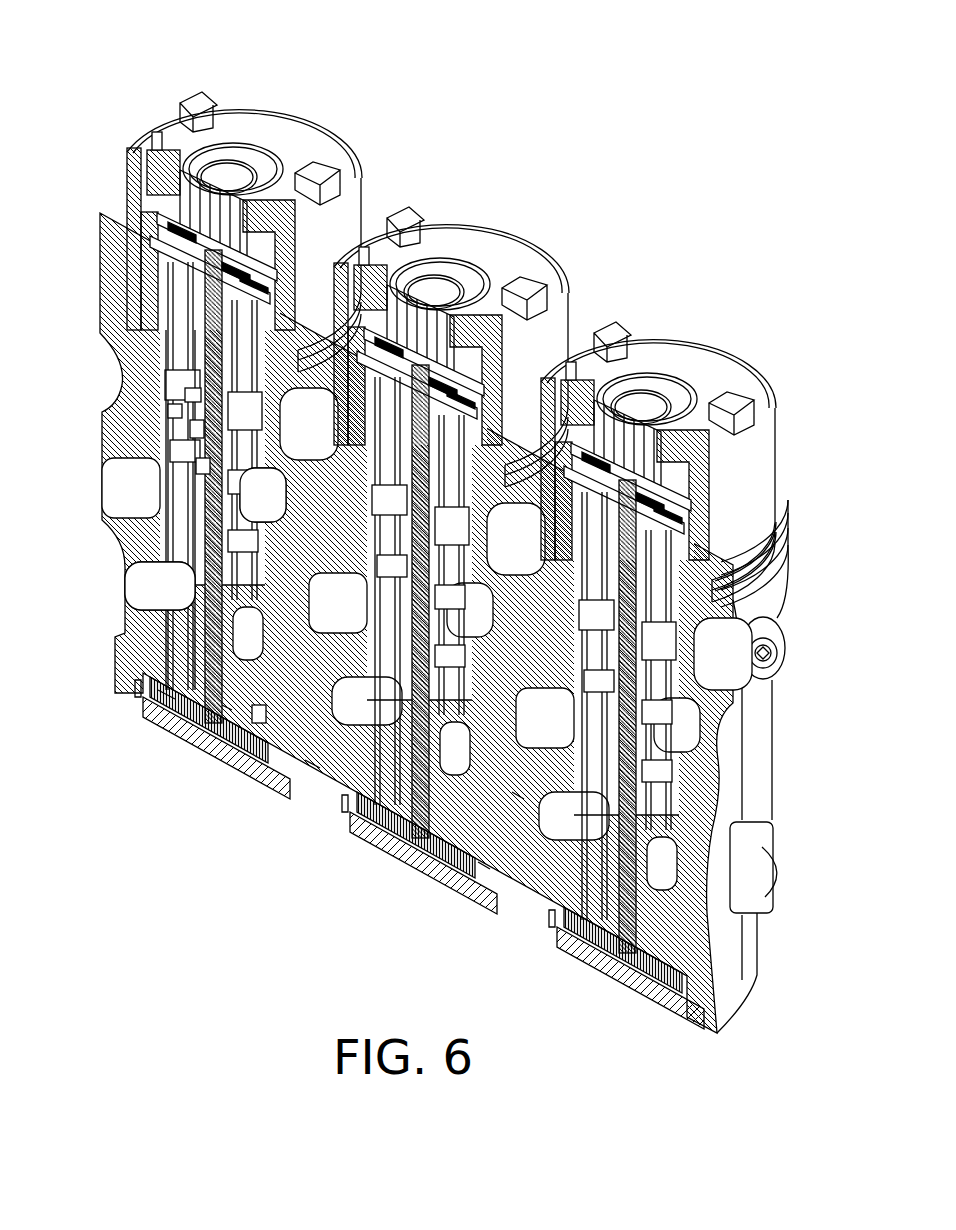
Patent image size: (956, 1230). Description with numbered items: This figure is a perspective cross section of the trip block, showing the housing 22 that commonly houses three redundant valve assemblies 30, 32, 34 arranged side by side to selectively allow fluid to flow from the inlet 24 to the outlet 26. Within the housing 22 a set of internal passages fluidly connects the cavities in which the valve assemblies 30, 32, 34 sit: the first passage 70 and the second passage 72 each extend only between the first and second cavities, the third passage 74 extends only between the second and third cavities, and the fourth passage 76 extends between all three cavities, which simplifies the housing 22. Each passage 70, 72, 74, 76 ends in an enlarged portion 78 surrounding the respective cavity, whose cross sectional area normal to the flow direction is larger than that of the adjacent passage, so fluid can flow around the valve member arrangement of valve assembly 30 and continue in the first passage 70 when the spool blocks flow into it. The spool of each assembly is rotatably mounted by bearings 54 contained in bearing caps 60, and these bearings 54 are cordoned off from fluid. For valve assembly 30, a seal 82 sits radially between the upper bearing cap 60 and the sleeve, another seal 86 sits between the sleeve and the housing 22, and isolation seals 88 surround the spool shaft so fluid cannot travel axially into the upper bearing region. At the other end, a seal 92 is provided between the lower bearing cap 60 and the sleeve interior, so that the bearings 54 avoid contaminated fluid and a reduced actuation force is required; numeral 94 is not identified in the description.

The housing 22 is at (377, 845).
The inlet 24 is at (102, 437).
The outlet 26 is at (762, 836).
The valve assembly 30 is at (221, 82).
The valve assembly 32 is at (457, 212).
The valve assembly 34 is at (675, 327).
The bearings 54 is at (177, 327).
The bearing cap 60 is at (200, 430).
The first passage 70 is at (315, 760).
The second passage 72 is at (280, 513).
The third passage 74 is at (483, 867).
The fourth passage 76 is at (517, 797).
The enlarged portion 78 is at (160, 597).
The seal 82 is at (198, 396).
The seal 86 is at (178, 412).
The isolation seals 88 is at (205, 468).
The seal 92 is at (167, 700).
The retainer 94 is at (227, 717).